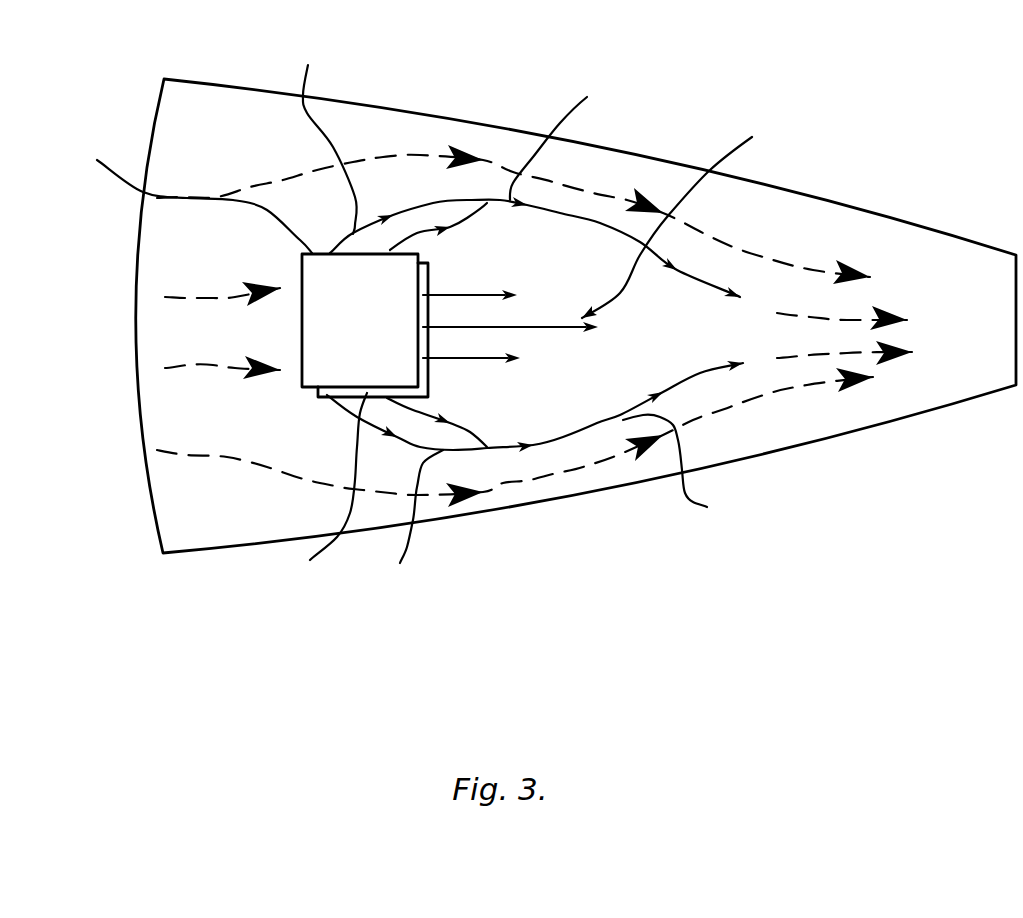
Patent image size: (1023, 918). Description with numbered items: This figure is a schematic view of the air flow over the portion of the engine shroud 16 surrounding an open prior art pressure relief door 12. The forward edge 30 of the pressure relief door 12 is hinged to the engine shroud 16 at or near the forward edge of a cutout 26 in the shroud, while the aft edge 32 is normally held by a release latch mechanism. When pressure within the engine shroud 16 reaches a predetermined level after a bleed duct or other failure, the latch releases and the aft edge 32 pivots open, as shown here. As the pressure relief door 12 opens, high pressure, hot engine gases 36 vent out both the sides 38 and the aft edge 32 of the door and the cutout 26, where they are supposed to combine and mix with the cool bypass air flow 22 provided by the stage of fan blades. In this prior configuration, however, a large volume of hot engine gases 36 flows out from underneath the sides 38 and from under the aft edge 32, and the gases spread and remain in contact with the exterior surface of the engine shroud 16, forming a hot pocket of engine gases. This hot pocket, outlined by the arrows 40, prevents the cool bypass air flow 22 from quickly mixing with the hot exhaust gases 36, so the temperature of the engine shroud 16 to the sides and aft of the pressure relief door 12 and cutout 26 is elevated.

The pressure relief door 12 is at (388, 343).
The engine shroud 16 is at (605, 130).
The cool bypass air flow 22 is at (750, 252).
The cutout 26 is at (428, 373).
The forward edge 30 is at (302, 325).
The aft edge 32 is at (428, 320).
The hot engine gases 36 is at (487, 203).
The sides 38 is at (220, 362).
The arrows 40 is at (519, 314).